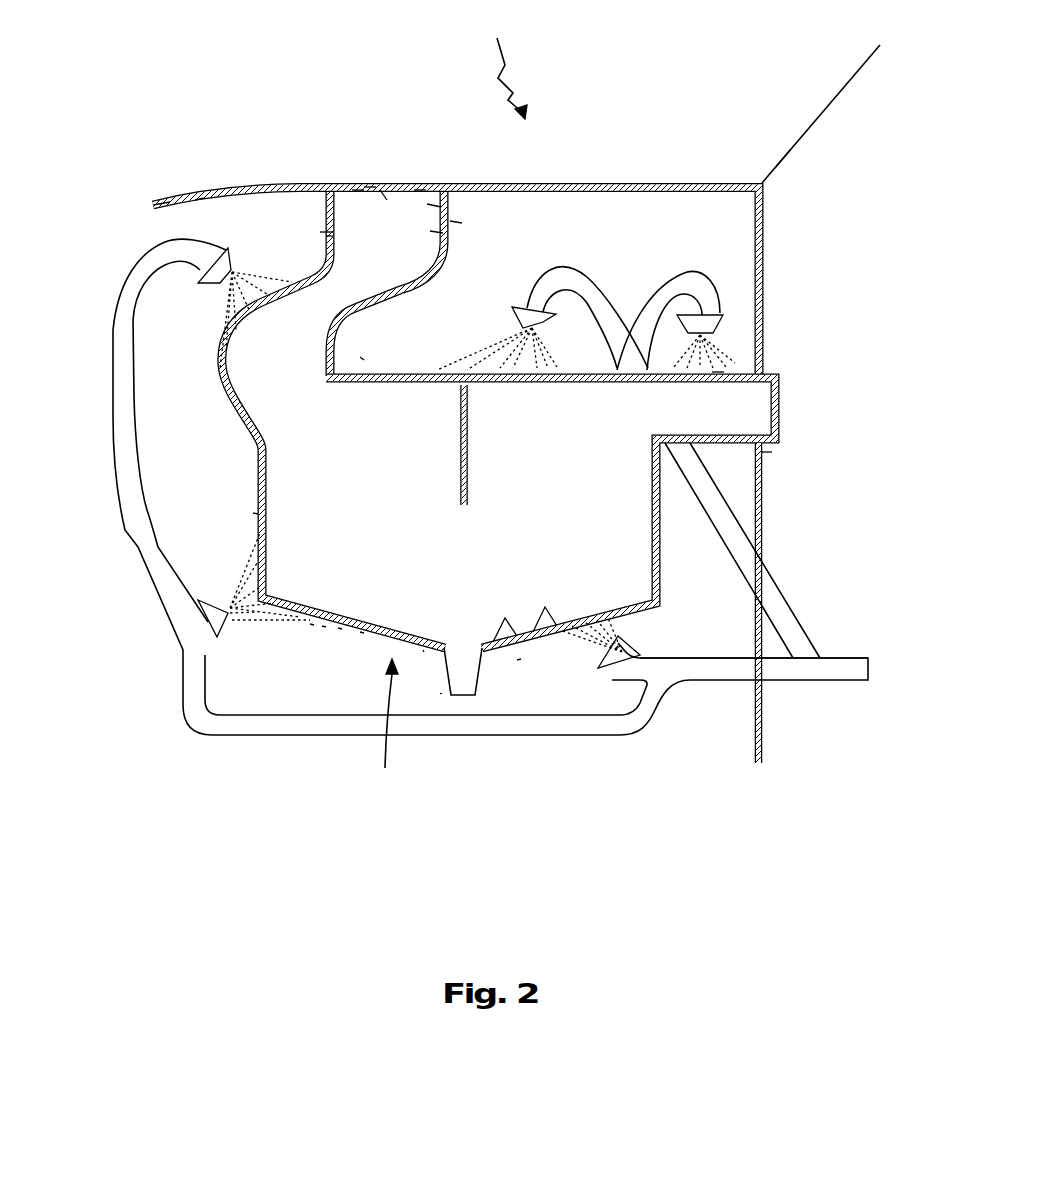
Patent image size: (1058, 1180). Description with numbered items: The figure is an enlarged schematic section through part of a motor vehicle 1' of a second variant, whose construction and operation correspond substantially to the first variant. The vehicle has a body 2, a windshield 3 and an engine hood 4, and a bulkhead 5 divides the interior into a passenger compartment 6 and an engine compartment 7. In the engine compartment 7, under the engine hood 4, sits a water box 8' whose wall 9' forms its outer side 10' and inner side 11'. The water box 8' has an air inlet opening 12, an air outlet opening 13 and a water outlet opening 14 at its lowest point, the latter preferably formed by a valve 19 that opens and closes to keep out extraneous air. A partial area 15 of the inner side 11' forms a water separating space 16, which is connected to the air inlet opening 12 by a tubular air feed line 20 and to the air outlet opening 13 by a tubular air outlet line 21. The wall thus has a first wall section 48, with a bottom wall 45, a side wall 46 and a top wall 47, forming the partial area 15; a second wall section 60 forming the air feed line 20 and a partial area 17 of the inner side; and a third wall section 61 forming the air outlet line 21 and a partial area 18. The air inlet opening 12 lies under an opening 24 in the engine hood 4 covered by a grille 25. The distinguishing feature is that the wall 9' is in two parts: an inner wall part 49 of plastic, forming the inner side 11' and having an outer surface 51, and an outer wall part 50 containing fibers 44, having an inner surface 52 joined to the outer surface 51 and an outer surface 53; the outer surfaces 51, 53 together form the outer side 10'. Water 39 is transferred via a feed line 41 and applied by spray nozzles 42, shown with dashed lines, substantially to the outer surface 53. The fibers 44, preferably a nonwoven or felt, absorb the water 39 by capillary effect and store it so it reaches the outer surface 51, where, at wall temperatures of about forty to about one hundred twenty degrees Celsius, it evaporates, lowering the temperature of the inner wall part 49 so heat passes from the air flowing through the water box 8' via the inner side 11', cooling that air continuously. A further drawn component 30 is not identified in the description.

The motor vehicle 1' is at (503, 64).
The body 2 is at (172, 190).
The windshield 3 is at (830, 100).
The engine hood 4 is at (573, 183).
The bulkhead 5 is at (763, 747).
The passenger compartment 6 is at (782, 160).
The engine compartment 7 is at (202, 210).
The water box 8' is at (380, 725).
The wall 9' is at (412, 720).
The outer side 10' is at (442, 420).
The inner side 11' is at (406, 151).
The air inlet opening 12 is at (387, 200).
The air outlet opening 13 is at (770, 407).
The water outlet opening 14 is at (462, 693).
The partial area 15 is at (517, 660).
The water separating space 16 is at (306, 540).
The partial area 17 is at (447, 247).
The partial area 18 is at (767, 450).
The valve 19 is at (440, 693).
The air feed line 20 is at (320, 232).
The air outlet line 21 is at (718, 366).
The opening 24 is at (358, 190).
The grille 25 is at (370, 187).
The baffle 30 is at (462, 422).
The water 39 is at (210, 300).
The feed line 41 is at (750, 577).
The spray nozzles 42 is at (216, 251).
The fibers 44 is at (360, 357).
The bottom wall 45 is at (322, 626).
The side wall 46 is at (253, 513).
The top wall 47 is at (578, 365).
The first wall section 48 is at (360, 632).
The inner wall part 49 is at (310, 624).
The outer wall part 50 is at (338, 628).
The outer surface 51 is at (453, 190).
The inner surface 52 is at (557, 630).
The outer surface 53 is at (403, 367).
The second wall section 60 is at (326, 236).
The third wall section 61 is at (710, 447).